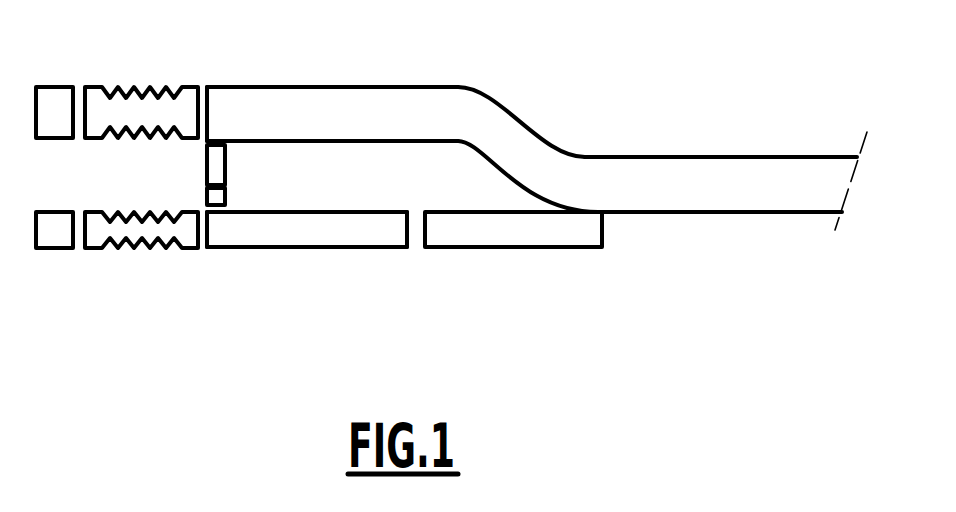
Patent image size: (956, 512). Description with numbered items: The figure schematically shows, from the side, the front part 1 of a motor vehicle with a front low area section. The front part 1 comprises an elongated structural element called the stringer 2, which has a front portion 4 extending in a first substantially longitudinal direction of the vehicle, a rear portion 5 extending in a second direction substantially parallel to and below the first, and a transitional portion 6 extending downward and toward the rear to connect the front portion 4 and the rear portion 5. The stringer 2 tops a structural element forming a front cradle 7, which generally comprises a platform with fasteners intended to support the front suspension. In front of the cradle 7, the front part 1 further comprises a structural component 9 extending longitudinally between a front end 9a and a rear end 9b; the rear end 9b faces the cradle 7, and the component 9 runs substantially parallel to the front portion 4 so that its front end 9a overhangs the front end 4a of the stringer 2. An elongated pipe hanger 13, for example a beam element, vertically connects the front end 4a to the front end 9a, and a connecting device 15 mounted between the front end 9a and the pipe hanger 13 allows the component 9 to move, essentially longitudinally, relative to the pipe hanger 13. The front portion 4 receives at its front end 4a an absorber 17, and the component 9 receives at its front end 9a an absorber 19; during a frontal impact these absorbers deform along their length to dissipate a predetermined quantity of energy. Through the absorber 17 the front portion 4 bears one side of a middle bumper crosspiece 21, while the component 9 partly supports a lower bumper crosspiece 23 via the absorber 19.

The front part 1 is at (399, 322).
The stringer 2 is at (566, 71).
The front portion 4 is at (328, 85).
The front end 4a is at (202, 88).
The rear portion 5 is at (718, 212).
The transitional portion 6 is at (527, 142).
The cradle 7 is at (522, 247).
The structural component 9 is at (308, 247).
The front end 9a is at (202, 238).
The rear end 9b is at (407, 228).
The pipe hanger 13 is at (225, 157).
The connecting device 15 is at (225, 197).
The absorber 17 is at (138, 86).
The absorber 19 is at (138, 245).
The middle bumper crosspiece 21 is at (63, 86).
The lower bumper crosspiece 23 is at (63, 248).